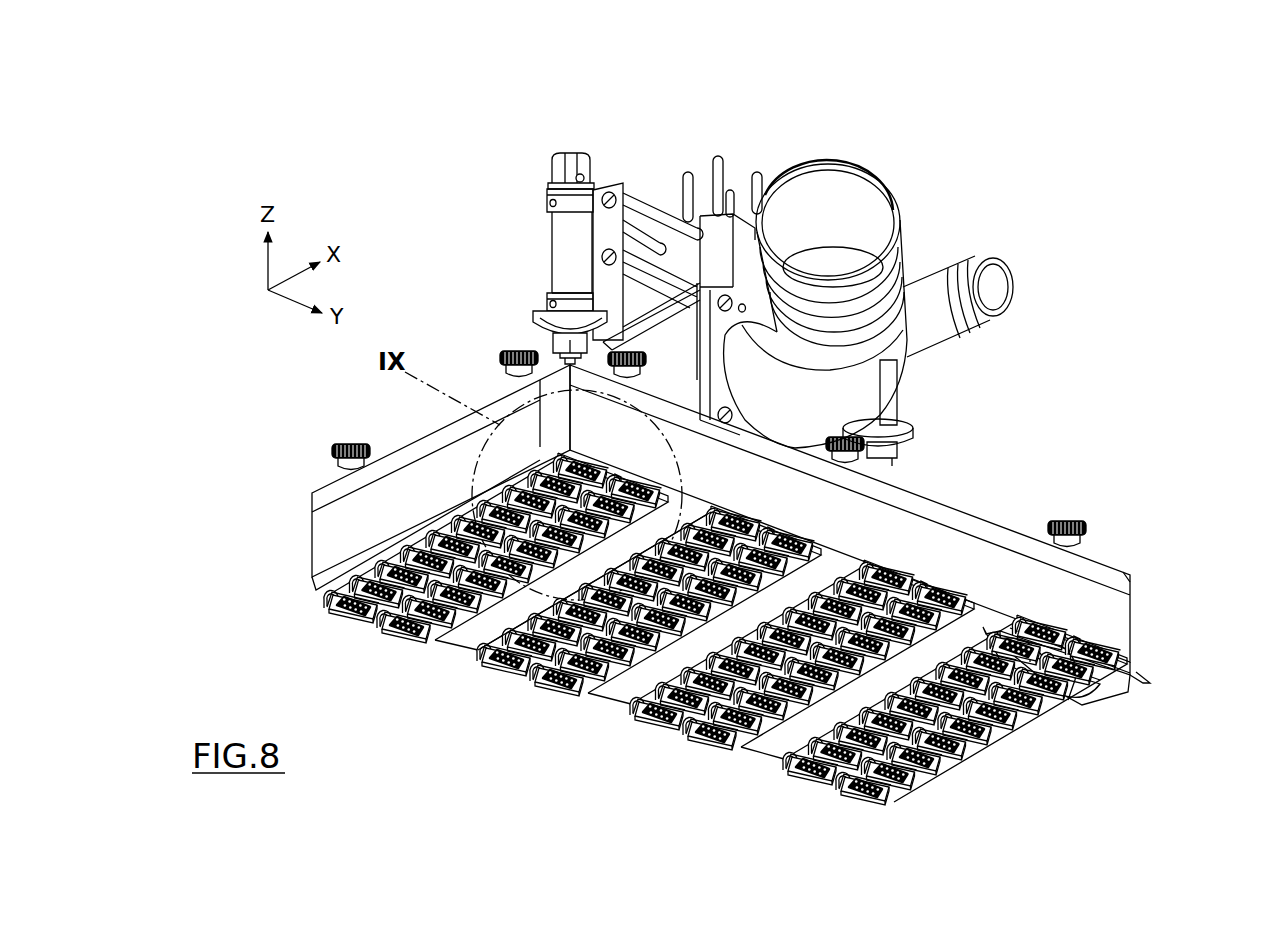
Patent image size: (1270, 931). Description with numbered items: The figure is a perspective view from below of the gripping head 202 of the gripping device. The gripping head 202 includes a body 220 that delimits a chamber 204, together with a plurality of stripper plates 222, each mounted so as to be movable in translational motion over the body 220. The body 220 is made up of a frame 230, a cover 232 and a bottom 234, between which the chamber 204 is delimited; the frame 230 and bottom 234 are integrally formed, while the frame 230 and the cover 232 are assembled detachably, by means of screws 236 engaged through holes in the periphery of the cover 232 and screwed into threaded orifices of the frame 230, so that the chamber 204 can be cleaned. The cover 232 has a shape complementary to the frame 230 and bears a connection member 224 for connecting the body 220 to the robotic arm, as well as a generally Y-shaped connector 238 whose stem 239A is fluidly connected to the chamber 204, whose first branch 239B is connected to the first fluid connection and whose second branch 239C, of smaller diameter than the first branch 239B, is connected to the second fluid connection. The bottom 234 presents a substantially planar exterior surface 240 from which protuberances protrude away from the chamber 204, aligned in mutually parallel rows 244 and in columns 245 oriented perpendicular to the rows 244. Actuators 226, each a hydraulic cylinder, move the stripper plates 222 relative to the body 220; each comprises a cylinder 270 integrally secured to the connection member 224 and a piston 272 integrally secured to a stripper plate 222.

The gripping head 202 is at (487, 155).
The chamber 204 is at (958, 545).
The body 220 is at (1150, 612).
The stripper plates 222 is at (330, 598).
The connection member 224 is at (742, 163).
The actuators 226 is at (553, 257).
The frame 230 is at (325, 533).
The cover 232 is at (428, 435).
The bottom 234 is at (475, 630).
The screws 236 is at (345, 445).
The connector 238 is at (952, 257).
The stem 239A is at (815, 334).
The first branch 239B is at (862, 190).
The second branch 239C is at (993, 300).
The exterior surface 240 is at (704, 644).
The rows 244 is at (1052, 725).
The columns 245 is at (397, 640).
The cylinder 270 is at (558, 222).
The piston 272 is at (570, 363).